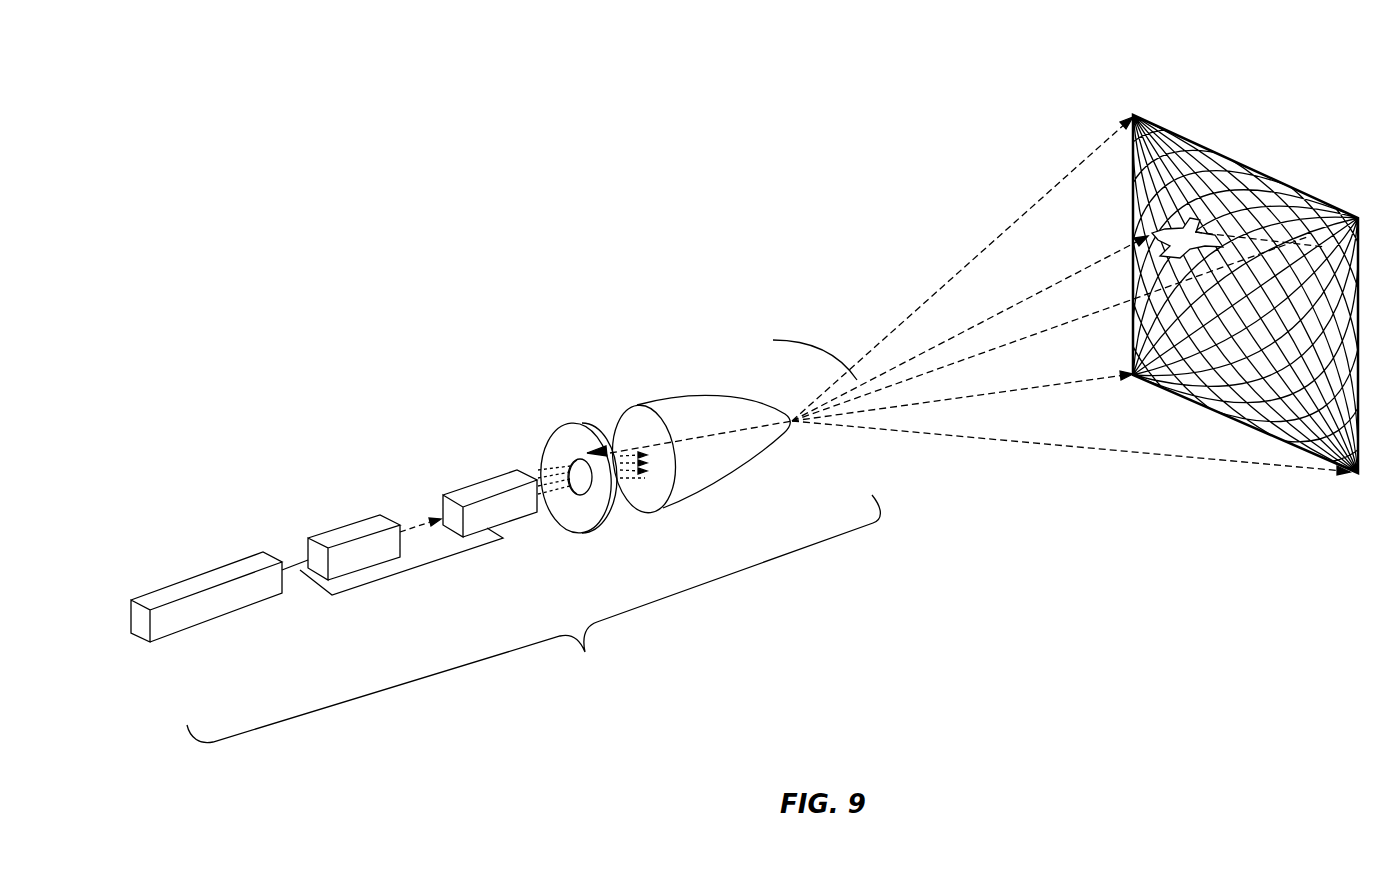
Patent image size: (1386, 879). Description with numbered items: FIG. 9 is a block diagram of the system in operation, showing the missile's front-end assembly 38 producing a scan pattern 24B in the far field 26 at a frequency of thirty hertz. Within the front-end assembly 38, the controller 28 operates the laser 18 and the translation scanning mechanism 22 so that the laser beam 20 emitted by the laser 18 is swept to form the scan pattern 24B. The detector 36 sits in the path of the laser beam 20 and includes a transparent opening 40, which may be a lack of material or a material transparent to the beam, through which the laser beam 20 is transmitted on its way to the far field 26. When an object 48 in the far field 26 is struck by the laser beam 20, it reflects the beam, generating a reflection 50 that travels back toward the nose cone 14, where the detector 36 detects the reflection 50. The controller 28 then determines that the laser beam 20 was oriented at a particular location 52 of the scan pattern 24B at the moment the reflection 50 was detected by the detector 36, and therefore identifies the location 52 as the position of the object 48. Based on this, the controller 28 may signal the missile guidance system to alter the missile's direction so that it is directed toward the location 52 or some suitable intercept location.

The nose cone 14 is at (720, 447).
The laser 18 is at (351, 526).
The laser beam 20 is at (417, 516).
The translation scanning mechanism 22 is at (493, 487).
The scan pattern 24B is at (1307, 403).
The far field 26 is at (1234, 289).
The controller 28 is at (220, 578).
The detector 36 is at (563, 445).
The front-end assembly 38 is at (533, 619).
The transparent opening 40 is at (590, 490).
The object 48 is at (1133, 374).
The reflection 50 is at (743, 420).
The location 52 is at (1148, 231).